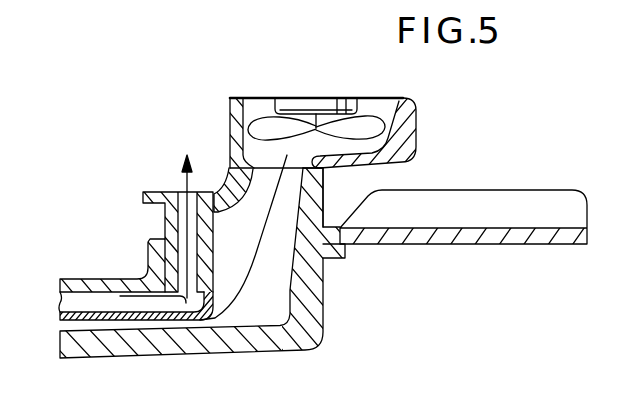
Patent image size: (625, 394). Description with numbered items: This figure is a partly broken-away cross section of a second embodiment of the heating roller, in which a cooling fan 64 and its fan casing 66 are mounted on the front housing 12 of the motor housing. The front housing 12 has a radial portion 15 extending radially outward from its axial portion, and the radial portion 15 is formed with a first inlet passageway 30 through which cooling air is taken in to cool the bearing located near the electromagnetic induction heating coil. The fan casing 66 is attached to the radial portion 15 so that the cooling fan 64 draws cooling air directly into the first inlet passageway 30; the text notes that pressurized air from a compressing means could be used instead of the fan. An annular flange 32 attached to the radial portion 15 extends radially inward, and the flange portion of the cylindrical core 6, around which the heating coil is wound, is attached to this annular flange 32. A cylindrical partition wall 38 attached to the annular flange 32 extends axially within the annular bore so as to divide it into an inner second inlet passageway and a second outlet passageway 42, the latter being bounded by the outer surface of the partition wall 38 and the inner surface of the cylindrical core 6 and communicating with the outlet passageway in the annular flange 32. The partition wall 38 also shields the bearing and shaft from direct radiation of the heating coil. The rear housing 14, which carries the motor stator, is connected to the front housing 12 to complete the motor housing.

The cylindrical core 6 is at (99, 284).
The front housing 12 is at (308, 334).
The rear housing 14 is at (480, 242).
The radial portion 15 is at (314, 186).
The first inlet passageway 30 is at (288, 242).
The annular flange 32 is at (158, 192).
The cylindrical partition wall 38 is at (63, 322).
The second outlet passageway 42 is at (82, 303).
The cooling fan 64 is at (322, 99).
The fan casing 66 is at (418, 123).